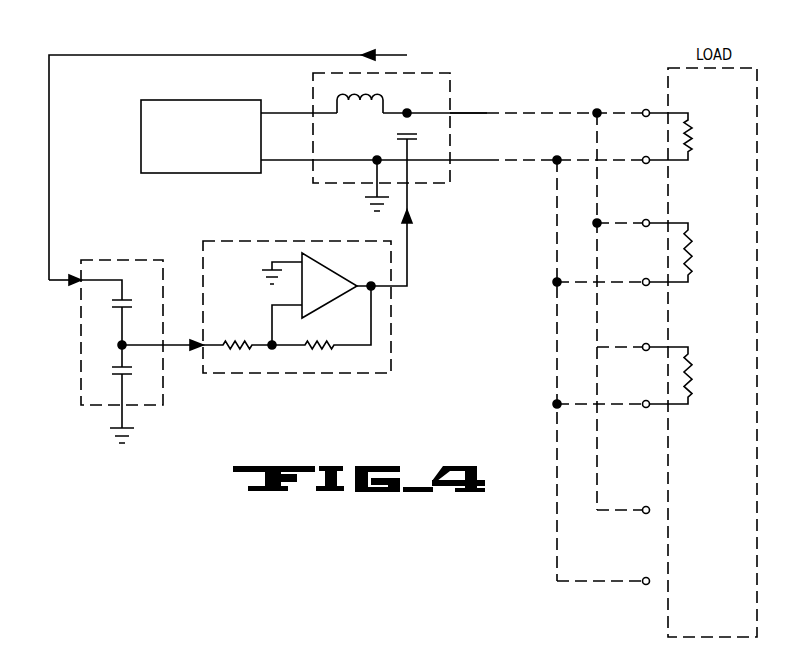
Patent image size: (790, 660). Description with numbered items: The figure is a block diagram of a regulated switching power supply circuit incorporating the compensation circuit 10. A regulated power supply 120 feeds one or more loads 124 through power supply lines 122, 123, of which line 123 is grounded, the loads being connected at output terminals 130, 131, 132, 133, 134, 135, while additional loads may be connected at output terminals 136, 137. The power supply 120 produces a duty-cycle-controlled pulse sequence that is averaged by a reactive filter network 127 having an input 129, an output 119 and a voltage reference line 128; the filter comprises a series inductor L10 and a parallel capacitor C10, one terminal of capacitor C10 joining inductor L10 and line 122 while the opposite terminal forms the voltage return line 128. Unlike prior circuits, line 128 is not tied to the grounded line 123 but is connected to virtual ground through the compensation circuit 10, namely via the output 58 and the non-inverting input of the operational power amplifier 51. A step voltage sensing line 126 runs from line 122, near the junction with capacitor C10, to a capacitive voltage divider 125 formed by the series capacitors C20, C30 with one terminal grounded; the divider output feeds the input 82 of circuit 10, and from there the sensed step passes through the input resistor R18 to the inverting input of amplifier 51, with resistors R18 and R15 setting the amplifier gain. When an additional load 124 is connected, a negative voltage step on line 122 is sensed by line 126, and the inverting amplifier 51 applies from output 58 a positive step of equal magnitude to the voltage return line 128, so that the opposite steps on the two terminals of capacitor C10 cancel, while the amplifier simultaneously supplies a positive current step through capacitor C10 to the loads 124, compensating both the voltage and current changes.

The overshoot, undershoot and delay compensation circuit 10 is at (316, 307).
The operational power amplifier 51 is at (324, 272).
The output 58 is at (399, 290).
The input 82 is at (185, 342).
The output 119 is at (461, 112).
The regulated power supply 120 is at (222, 100).
The power supply line 122 is at (489, 112).
The power supply line 123 is at (489, 160).
The load 124 is at (686, 258).
The capacitive voltage divider 125 is at (122, 332).
The step voltage sensing line 126 is at (49, 90).
The reactive filter network 127 is at (400, 121).
The voltage reference line 128 is at (404, 150).
The input 129 is at (304, 113).
The output terminal 130 is at (646, 108).
The output terminal 131 is at (646, 155).
The output terminal 132 is at (646, 218).
The output terminal 133 is at (646, 278).
The output terminal 134 is at (646, 342).
The output terminal 135 is at (646, 400).
The output terminal 136 is at (645, 506).
The output terminal 137 is at (647, 577).
The series inductor L10 is at (360, 110).
The parallel capacitor C10 is at (420, 137).
The capacitor C20 is at (134, 304).
The capacitor C30 is at (134, 372).
The input resistor R18 is at (237, 334).
The feedback resistor R15 is at (321, 317).